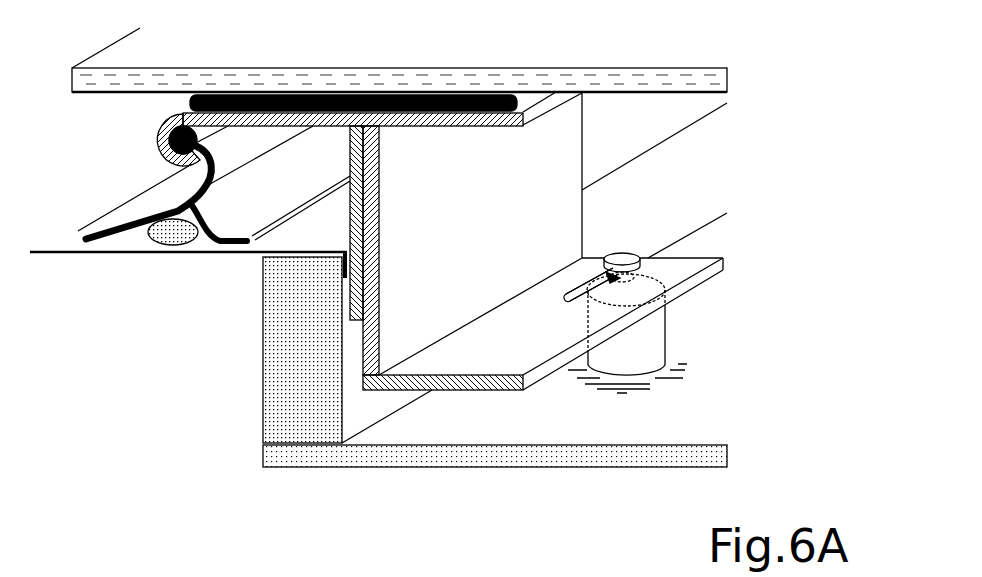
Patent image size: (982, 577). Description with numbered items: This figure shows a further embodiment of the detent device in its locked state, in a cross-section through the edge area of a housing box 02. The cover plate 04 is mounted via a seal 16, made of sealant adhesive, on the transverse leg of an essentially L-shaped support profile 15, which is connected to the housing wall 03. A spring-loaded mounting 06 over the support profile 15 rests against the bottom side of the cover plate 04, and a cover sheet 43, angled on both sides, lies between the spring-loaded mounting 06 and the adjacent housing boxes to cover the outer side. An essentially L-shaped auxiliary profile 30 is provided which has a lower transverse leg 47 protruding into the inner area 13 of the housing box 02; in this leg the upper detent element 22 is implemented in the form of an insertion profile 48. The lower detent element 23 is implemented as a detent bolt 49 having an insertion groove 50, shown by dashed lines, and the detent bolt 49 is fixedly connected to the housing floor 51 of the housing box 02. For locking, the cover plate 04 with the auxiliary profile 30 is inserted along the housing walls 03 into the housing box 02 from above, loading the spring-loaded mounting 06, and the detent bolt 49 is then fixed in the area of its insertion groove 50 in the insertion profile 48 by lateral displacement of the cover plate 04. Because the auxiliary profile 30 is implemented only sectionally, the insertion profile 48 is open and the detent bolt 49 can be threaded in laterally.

The cover plate 04 is at (233, 57).
The seal 16 is at (377, 97).
The auxiliary profile 30 is at (537, 160).
The spring-loaded mounting 06 is at (146, 161).
The support profile 15 is at (340, 130).
The cover sheet 43 is at (133, 253).
The housing wall 03 is at (290, 383).
The lower transverse leg 47 is at (455, 390).
The housing box 02 is at (521, 425).
The upper detent element 22 is at (567, 295).
The insertion profile 48 is at (591, 284).
The insertion groove 50 is at (643, 260).
The lower detent element 23 is at (697, 300).
The detent bolt 49 is at (652, 327).
The housing floor 51 is at (627, 388).
The inner area 13 is at (773, 356).